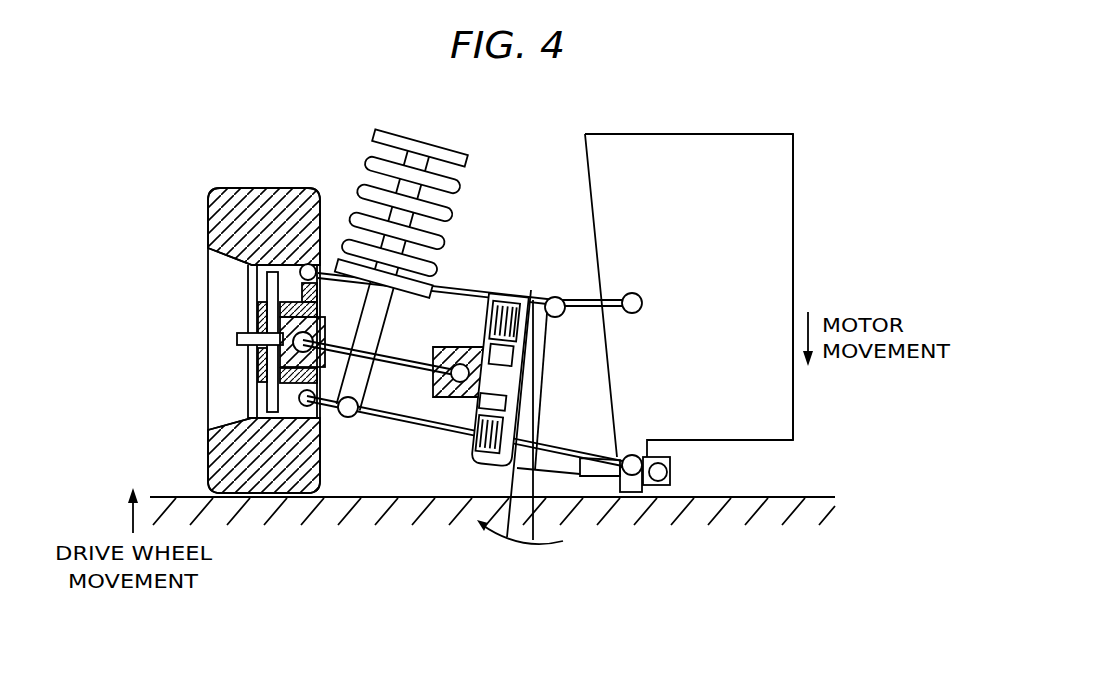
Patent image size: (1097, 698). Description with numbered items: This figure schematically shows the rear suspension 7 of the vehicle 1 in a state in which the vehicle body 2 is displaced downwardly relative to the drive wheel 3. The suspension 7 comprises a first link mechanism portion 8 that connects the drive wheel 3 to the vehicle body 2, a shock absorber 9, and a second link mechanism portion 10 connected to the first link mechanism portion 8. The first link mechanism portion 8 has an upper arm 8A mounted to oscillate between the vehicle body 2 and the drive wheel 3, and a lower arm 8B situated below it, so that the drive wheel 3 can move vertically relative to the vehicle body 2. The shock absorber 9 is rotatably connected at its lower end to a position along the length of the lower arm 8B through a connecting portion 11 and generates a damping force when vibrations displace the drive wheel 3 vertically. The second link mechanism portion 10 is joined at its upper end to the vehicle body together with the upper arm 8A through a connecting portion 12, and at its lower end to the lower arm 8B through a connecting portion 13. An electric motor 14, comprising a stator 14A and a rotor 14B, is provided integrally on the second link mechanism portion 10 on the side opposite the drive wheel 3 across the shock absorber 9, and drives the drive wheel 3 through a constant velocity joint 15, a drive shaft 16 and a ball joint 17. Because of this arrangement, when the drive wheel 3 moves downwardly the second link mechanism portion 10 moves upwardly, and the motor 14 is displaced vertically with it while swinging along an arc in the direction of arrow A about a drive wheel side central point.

The vehicle 1 is at (810, 142).
The vehicle body 2 is at (793, 260).
The drive wheel 3 is at (262, 205).
The suspension 7 is at (472, 182).
The first link mechanism portion 8 is at (390, 418).
The upper arm 8A is at (332, 270).
The lower arm 8B is at (590, 472).
The shock absorber 9 is at (373, 150).
The second link mechanism portion 10 is at (557, 298).
The connecting portion 11 is at (330, 405).
The connecting portion 12 is at (627, 294).
The connecting portion 13 is at (660, 484).
The motor 14 is at (526, 297).
The stator 14A is at (495, 300).
The rotor 14B is at (463, 400).
The constant velocity joint 15 is at (465, 390).
The drive shaft 16 is at (378, 368).
The ball joint 17 is at (292, 395).
The arrow A is at (520, 434).